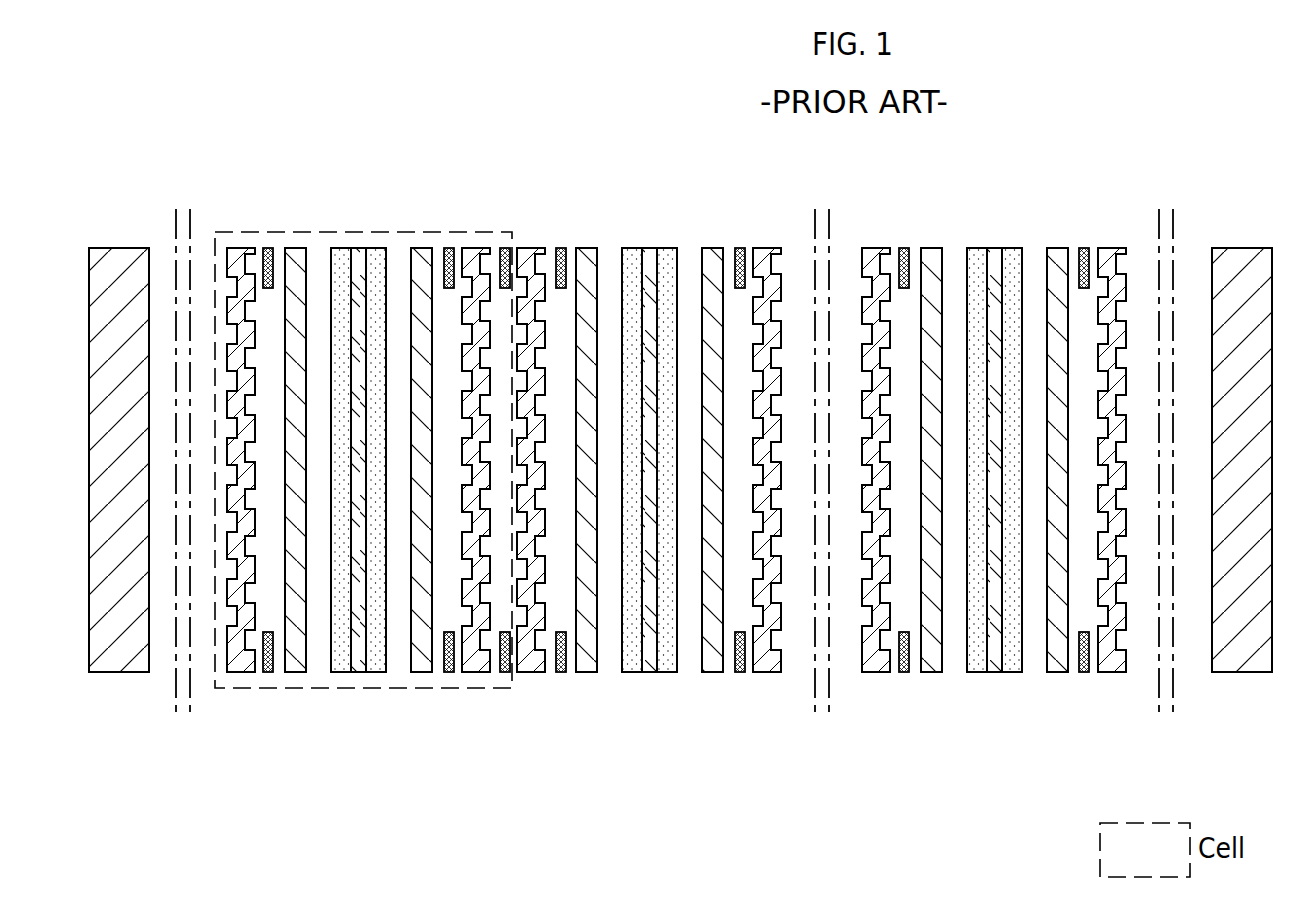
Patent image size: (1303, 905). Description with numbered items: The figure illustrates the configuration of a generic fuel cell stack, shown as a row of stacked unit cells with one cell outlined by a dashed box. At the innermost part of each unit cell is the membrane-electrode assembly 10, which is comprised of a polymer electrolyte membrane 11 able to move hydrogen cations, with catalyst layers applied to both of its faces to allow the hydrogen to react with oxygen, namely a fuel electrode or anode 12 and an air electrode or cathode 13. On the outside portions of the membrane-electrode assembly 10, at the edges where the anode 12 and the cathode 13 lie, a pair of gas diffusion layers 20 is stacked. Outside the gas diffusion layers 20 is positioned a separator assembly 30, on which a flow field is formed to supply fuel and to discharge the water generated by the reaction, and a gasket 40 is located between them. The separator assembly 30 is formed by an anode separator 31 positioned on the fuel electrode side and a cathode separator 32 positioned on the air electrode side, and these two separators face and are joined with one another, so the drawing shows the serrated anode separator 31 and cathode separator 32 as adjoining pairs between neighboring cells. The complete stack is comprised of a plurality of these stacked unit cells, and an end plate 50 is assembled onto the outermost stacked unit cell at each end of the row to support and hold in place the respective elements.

The membrane-electrode assembly 10 is at (655, 552).
The polymer electrolyte membrane 11 is at (358, 662).
The fuel electrode (anode) 12 is at (375, 660).
The air electrode (cathode) 13 is at (342, 665).
The gas diffusion layer 20 is at (297, 665).
The separator assembly 30 is at (664, 558).
The anode separator 31 is at (238, 667).
The cathode separator 32 is at (477, 662).
The gasket 40 is at (270, 248).
The end plate 50 is at (117, 652).